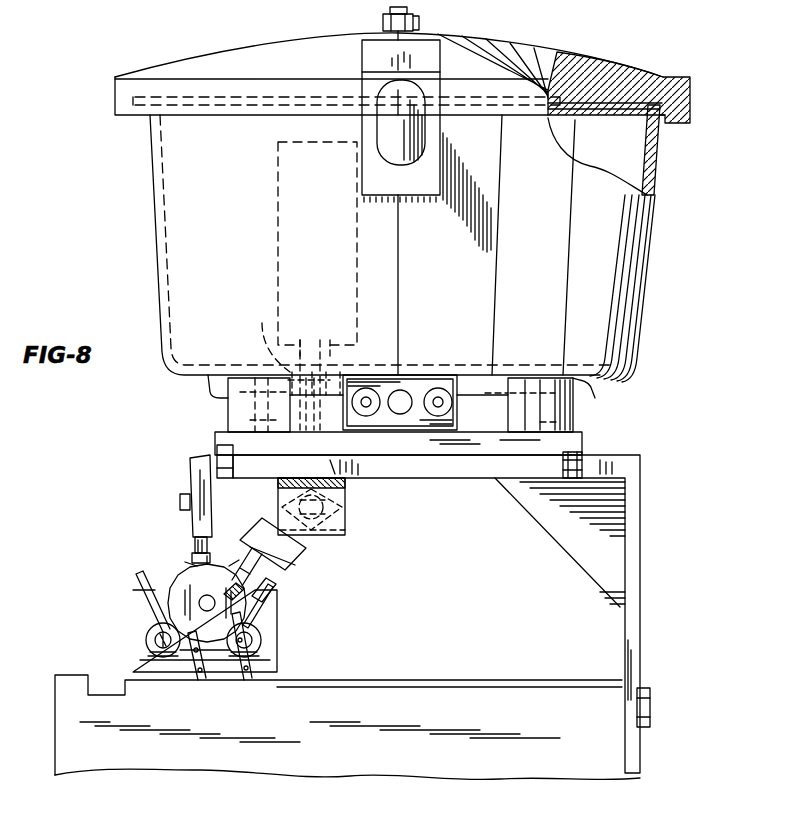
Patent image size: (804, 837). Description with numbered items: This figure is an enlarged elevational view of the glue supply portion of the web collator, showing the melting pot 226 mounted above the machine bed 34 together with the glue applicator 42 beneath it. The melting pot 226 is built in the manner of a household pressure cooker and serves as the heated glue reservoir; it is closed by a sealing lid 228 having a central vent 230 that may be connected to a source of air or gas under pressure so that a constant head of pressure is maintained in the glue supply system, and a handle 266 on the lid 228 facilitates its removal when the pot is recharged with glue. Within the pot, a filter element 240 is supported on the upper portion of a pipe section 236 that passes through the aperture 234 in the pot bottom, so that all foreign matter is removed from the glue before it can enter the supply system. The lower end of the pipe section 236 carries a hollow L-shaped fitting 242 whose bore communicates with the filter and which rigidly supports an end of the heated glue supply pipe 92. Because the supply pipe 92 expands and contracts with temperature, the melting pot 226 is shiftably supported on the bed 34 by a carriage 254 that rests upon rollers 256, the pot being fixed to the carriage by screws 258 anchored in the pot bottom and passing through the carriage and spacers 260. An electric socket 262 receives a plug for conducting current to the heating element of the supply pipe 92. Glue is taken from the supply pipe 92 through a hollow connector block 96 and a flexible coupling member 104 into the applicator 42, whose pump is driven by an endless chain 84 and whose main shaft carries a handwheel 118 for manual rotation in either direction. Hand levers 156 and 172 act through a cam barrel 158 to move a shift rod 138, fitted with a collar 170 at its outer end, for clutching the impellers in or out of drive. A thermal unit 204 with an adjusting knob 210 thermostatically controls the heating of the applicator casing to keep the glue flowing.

The bed 34 is at (58, 716).
The glue applicator 42 is at (133, 600).
The endless chain 84 is at (248, 680).
The glue supply pipe 92 is at (345, 512).
The hollow connector block 96 is at (345, 522).
The coupling member 104 is at (262, 535).
The handwheel 118 is at (190, 578).
The shift rod 138 is at (155, 640).
The hand lever 156 is at (138, 578).
The cam barrel 158 is at (146, 636).
The collar 170 is at (185, 648).
The hand lever 172 is at (276, 584).
The thermal unit 204 is at (190, 470).
The adjusting knob 210 is at (180, 503).
The melting pot 226 is at (618, 237).
The lid 228 is at (692, 78).
The central vent 230 is at (384, 18).
The aperture 234 is at (262, 335).
The pipe section 236 is at (350, 366).
The filter element 240 is at (278, 253).
The L-shaped fitting 242 is at (345, 489).
The carriage 254 is at (582, 440).
The rollers 256 is at (217, 446).
The screws 258 is at (250, 424).
The spacers 260 is at (228, 408).
The electric socket 262 is at (415, 395).
The handle 266 is at (362, 62).